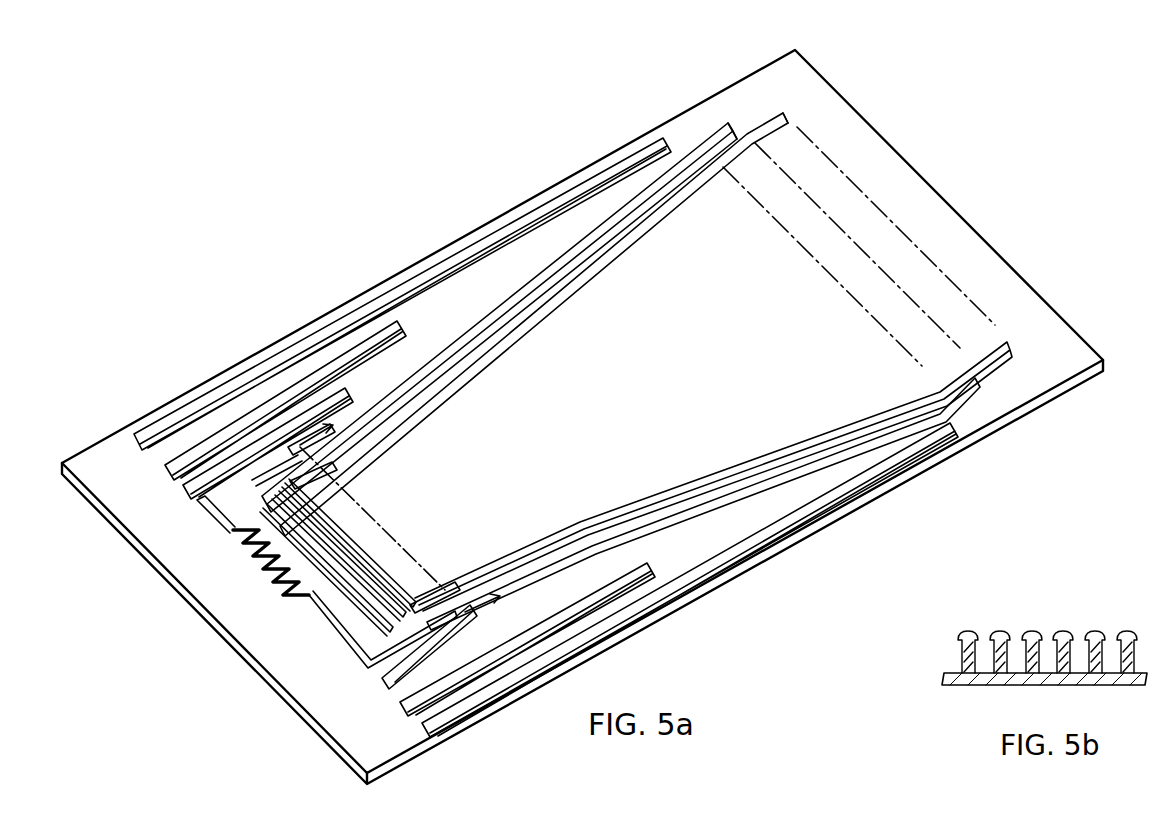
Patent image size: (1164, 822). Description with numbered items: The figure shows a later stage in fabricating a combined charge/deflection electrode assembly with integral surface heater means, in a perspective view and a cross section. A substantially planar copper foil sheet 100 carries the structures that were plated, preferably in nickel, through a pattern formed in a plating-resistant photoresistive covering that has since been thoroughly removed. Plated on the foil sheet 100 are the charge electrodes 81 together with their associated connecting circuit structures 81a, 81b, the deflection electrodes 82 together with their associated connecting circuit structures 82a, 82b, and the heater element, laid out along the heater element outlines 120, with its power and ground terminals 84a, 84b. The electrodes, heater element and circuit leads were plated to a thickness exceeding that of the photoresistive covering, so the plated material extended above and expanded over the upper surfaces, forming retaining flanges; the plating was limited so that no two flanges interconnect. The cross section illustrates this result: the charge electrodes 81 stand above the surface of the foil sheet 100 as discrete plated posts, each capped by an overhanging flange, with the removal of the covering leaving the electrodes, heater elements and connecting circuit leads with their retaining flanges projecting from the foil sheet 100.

In FIG. 5A, the foil sheet 100 is at (790, 542).
In FIG. 5B, the foil sheet 100 is at (1040, 686).
In FIG. 5A, the power terminal 84a is at (545, 204).
In FIG. 5A, the ground terminal 84b is at (940, 436).
In FIG. 5A, the connecting circuit structure 82a is at (470, 322).
In FIG. 5A, the connecting circuit structure 82b is at (707, 130).
In FIG. 5A, the connecting circuit structure 81a is at (590, 270).
In FIG. 5A, the connecting circuit structure 81b is at (777, 126).
In FIG. 5A, the charge electrodes 81 is at (303, 450).
In FIG. 5B, the charge electrodes 81 is at (1070, 627).
In FIG. 5A, the deflection electrodes 82 is at (362, 582).
In FIG. 5A, the heater element outlines 120 is at (650, 565).